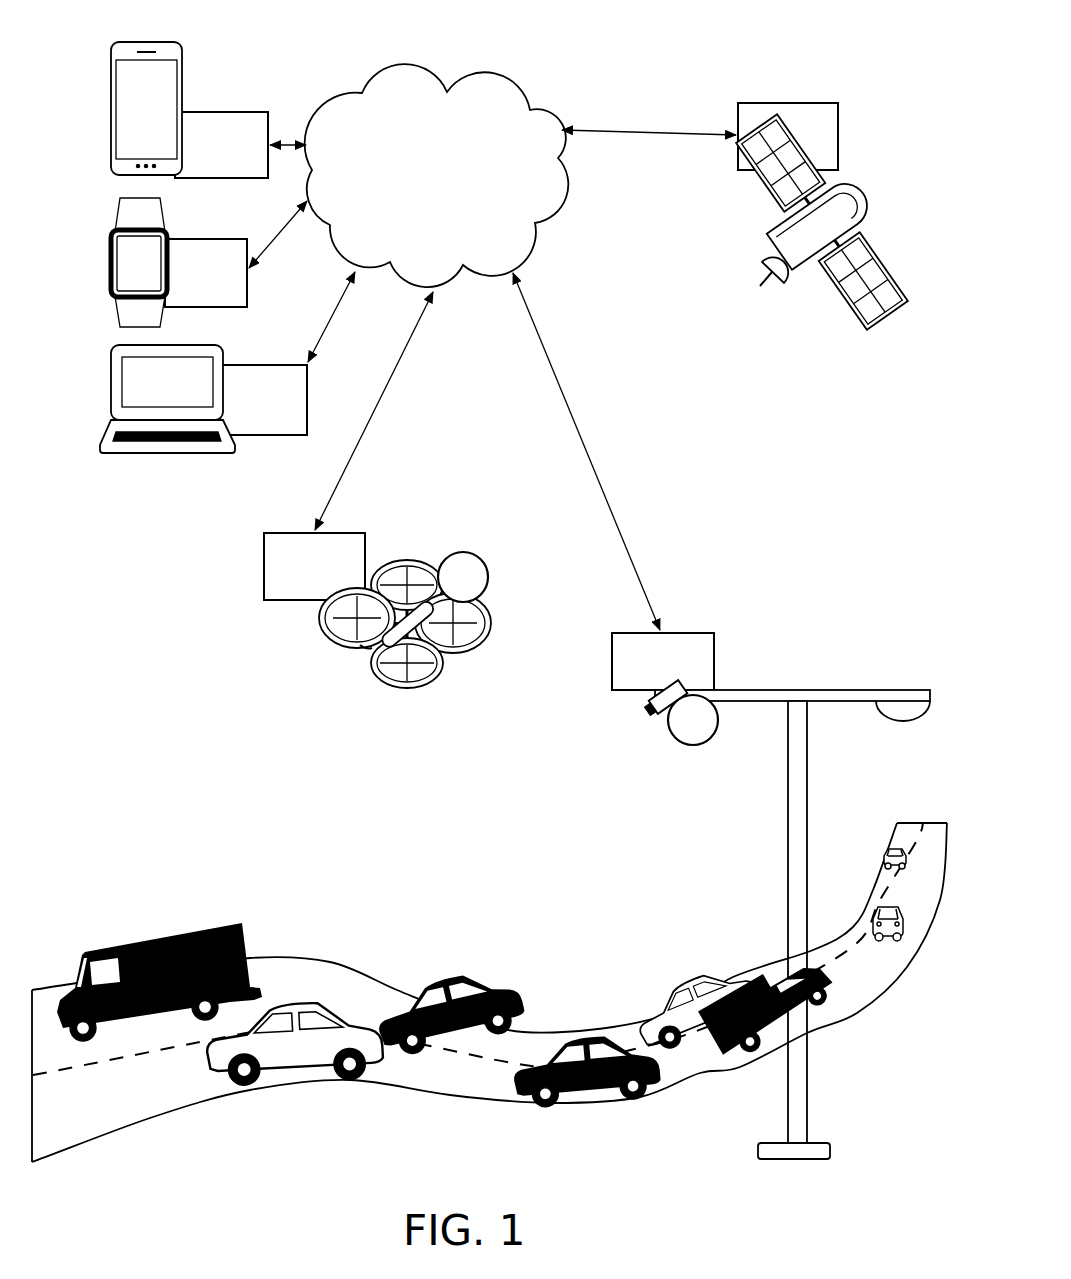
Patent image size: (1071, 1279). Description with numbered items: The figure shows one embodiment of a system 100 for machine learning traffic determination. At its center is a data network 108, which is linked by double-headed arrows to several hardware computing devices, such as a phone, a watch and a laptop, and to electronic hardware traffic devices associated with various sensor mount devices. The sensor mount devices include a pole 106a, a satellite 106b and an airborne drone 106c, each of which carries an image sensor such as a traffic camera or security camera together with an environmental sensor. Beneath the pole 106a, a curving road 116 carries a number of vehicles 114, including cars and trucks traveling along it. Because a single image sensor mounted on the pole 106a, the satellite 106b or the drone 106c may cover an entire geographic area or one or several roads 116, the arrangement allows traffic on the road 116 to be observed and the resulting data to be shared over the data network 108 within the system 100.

The system 100 is at (116, 29).
The pole 106a is at (745, 904).
The satellite 106b is at (820, 222).
The airborne drone 106c is at (396, 604).
The data network 108 is at (417, 201).
The vehicle 114 is at (430, 989).
The road 116 is at (338, 969).